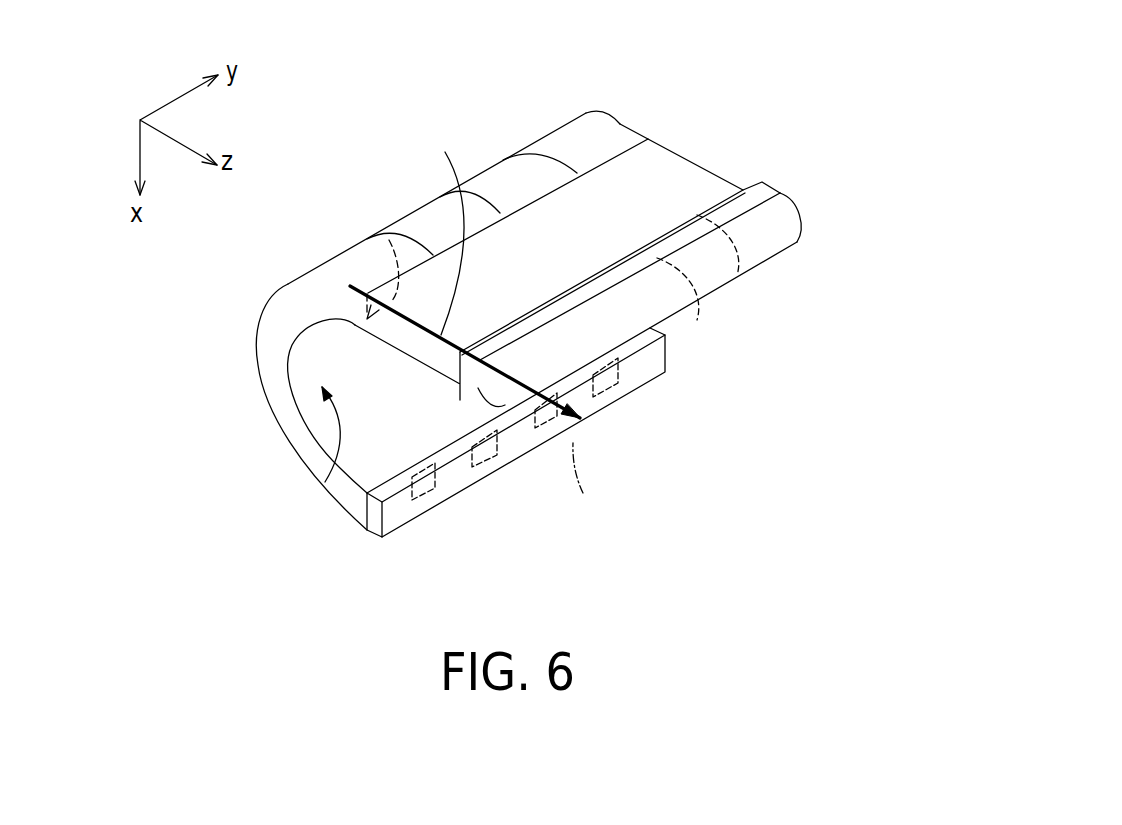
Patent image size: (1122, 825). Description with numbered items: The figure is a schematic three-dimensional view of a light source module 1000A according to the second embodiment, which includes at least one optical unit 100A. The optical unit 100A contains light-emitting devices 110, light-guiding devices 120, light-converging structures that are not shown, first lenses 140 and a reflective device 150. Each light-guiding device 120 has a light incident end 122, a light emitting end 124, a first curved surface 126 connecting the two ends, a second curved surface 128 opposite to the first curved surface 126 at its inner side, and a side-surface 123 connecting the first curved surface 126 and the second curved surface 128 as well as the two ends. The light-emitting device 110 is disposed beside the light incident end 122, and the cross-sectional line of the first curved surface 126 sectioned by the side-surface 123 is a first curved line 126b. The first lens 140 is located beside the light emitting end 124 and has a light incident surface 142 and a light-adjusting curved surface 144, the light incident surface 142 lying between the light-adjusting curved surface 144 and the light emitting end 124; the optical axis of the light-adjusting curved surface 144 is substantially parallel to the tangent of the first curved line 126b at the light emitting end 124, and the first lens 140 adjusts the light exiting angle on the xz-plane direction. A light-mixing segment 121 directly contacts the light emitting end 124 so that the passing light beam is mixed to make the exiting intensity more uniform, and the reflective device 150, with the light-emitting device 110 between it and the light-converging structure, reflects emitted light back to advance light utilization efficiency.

The light source module 1000A is at (869, 589).
The optical unit 100A is at (585, 101).
The light-emitting device 110 is at (603, 398).
The light-guiding device 120 is at (287, 396).
The light-mixing segment 121 is at (678, 172).
The light incident end 122 is at (376, 511).
The side-surface 123 is at (333, 483).
The light emitting end 124 is at (389, 240).
The first curved surface 126 is at (260, 344).
The first curved line 126b is at (620, 122).
The second curved surface 128 is at (323, 470).
The first lens 140 is at (484, 403).
The light incident surface 142 is at (478, 396).
The light-adjusting curved surface 144 is at (546, 362).
The reflective device 150 is at (640, 362).